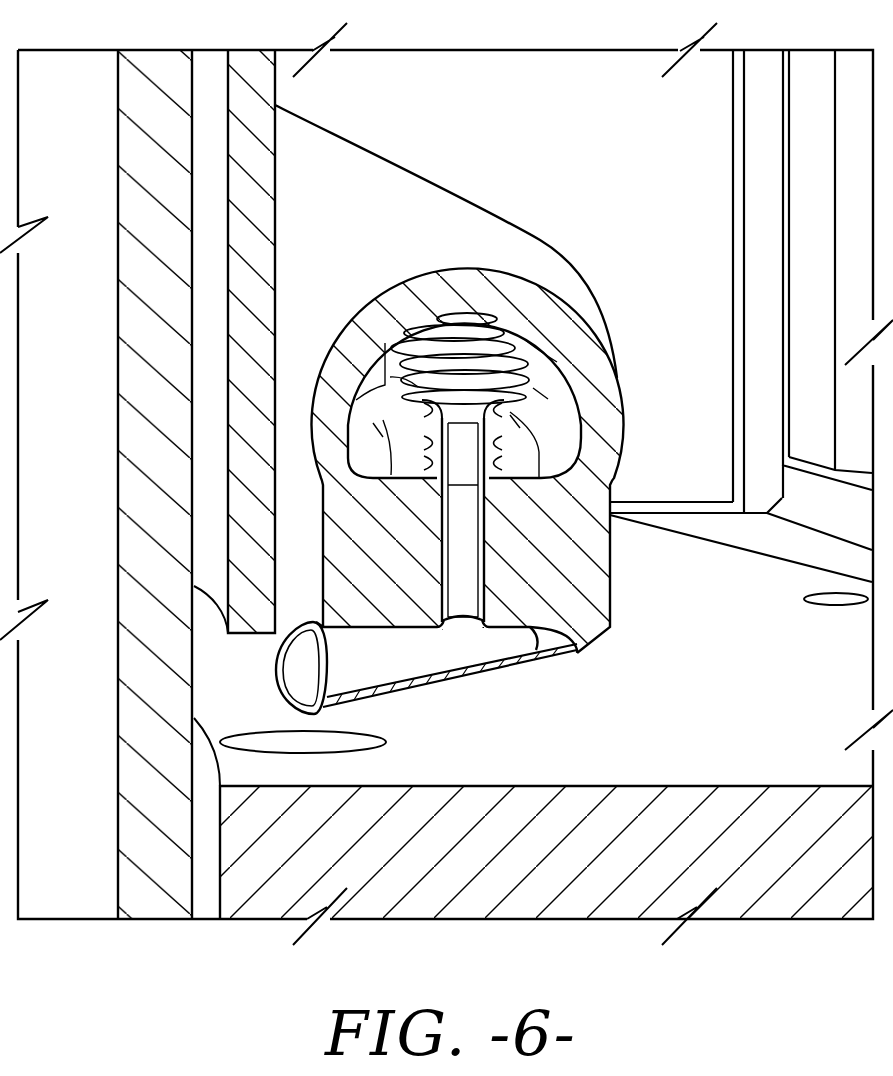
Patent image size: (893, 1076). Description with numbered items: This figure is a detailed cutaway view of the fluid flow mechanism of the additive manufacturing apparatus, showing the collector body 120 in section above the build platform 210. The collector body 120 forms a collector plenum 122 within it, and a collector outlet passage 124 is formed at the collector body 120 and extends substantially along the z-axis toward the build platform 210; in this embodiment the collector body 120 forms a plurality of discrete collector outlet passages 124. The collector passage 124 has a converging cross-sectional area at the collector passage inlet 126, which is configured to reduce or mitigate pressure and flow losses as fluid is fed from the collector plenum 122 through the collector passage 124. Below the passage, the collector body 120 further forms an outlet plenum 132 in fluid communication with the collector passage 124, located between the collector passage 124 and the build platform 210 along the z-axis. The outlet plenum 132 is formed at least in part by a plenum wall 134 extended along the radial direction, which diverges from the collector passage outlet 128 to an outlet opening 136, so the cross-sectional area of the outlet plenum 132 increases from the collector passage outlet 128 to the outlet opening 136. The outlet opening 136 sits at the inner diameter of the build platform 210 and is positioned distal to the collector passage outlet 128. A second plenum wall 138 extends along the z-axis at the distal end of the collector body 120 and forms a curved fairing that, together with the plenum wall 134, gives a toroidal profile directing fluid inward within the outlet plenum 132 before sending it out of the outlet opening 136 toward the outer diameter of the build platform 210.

The collector body 120 is at (507, 272).
The collector plenum 122 is at (553, 400).
The collector outlet passage 124 is at (463, 555).
The collector passage inlet 126 is at (583, 437).
The collector passage outlet 128 is at (470, 626).
The outlet plenum 132 is at (388, 663).
The plenum wall 134 is at (476, 666).
The outlet opening 136 is at (335, 707).
The second plenum wall 138 is at (280, 697).
The build platform 210 is at (670, 754).